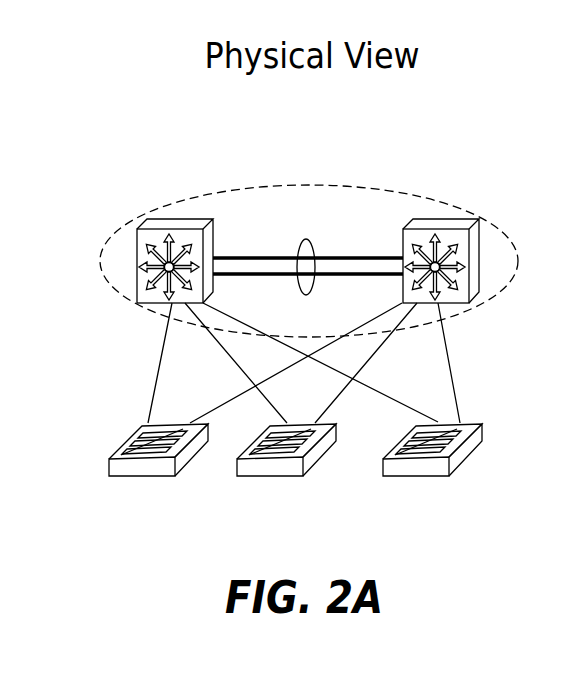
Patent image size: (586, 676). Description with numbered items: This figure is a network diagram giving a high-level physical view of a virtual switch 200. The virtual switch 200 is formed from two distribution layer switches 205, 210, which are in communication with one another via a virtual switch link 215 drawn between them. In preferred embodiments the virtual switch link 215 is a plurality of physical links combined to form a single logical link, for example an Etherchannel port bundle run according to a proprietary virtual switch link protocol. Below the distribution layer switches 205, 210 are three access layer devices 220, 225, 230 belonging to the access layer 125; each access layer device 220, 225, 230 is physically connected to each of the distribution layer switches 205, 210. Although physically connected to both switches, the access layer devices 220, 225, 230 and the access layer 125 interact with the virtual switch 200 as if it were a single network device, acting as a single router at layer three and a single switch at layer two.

The virtual switch 200 is at (455, 198).
The distribution layer switch 205 is at (475, 243).
The distribution layer switch 210 is at (160, 226).
The virtual switch link 215 is at (366, 252).
The access layer device 220 is at (181, 457).
The access layer device 225 is at (322, 458).
The access layer device 230 is at (467, 458).
The access layer 125 is at (476, 411).